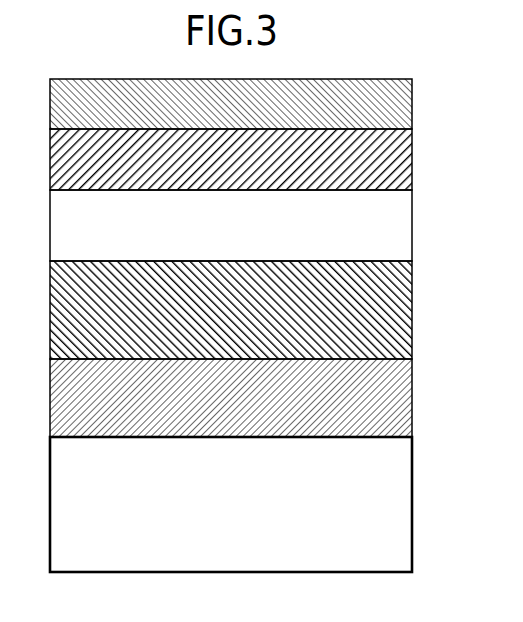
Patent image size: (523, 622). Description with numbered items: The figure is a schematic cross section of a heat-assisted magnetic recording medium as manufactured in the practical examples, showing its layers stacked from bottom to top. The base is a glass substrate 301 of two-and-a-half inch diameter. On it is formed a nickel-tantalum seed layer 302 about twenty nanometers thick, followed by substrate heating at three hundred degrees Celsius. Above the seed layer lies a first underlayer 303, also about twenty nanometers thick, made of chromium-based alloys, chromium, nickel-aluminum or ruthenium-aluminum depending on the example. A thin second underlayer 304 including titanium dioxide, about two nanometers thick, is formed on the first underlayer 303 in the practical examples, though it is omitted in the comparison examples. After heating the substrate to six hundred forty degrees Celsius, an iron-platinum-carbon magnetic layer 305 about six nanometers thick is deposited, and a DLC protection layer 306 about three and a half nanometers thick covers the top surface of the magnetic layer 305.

The glass substrate 301 is at (400, 506).
The seed layer 302 is at (400, 398).
The first underlayer 303 is at (400, 310).
The second underlayer 304 is at (400, 228).
The magnetic layer 305 is at (400, 162).
The DLC protection layer 306 is at (400, 104).